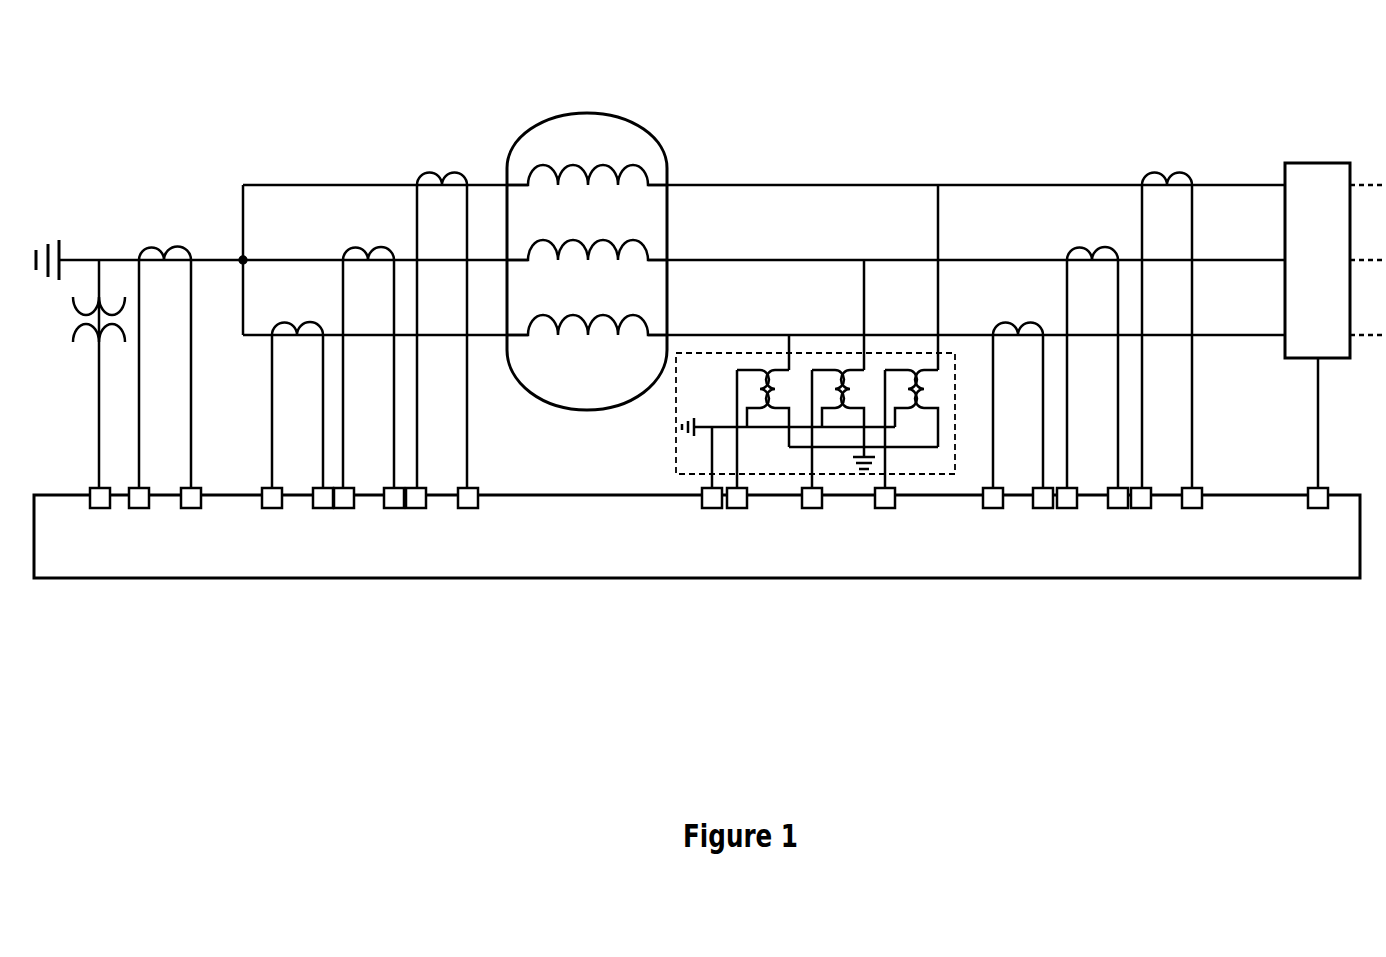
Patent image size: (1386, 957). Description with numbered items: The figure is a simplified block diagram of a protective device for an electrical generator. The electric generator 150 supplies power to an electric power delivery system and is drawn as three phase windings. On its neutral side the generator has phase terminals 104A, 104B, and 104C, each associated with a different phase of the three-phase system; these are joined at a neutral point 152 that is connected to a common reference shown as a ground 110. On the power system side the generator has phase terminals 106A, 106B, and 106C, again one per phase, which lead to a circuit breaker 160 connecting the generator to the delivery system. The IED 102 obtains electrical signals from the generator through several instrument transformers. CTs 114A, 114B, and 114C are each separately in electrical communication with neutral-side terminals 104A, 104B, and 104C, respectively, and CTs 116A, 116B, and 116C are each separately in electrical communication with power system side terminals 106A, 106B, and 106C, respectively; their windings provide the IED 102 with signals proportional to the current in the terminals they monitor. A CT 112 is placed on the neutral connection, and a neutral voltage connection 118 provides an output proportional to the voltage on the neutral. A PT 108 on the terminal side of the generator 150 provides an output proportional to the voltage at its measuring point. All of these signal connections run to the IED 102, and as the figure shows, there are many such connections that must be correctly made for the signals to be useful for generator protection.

The IED 102 is at (1228, 580).
The neutral-side phase terminal 104A is at (304, 184).
The neutral-side phase terminal 104B is at (262, 259).
The neutral-side phase terminal 104C is at (250, 337).
The power system side phase terminal 106A is at (1250, 187).
The power system side phase terminal 106B is at (1256, 262).
The power system side phase terminal 106C is at (1256, 337).
The PT 108 is at (675, 445).
The ground 110 is at (47, 246).
The CT 112 is at (170, 246).
The CT 114A is at (424, 174).
The CT 114B is at (350, 248).
The CT 114C is at (277, 324).
The CT 116A is at (1162, 174).
The CT 116B is at (1078, 248).
The CT 116C is at (1006, 316).
The neutral voltage connection 118 is at (87, 334).
The electric generator 150 is at (580, 112).
The neutral point 152 is at (240, 257).
The circuit breaker 160 is at (1330, 162).